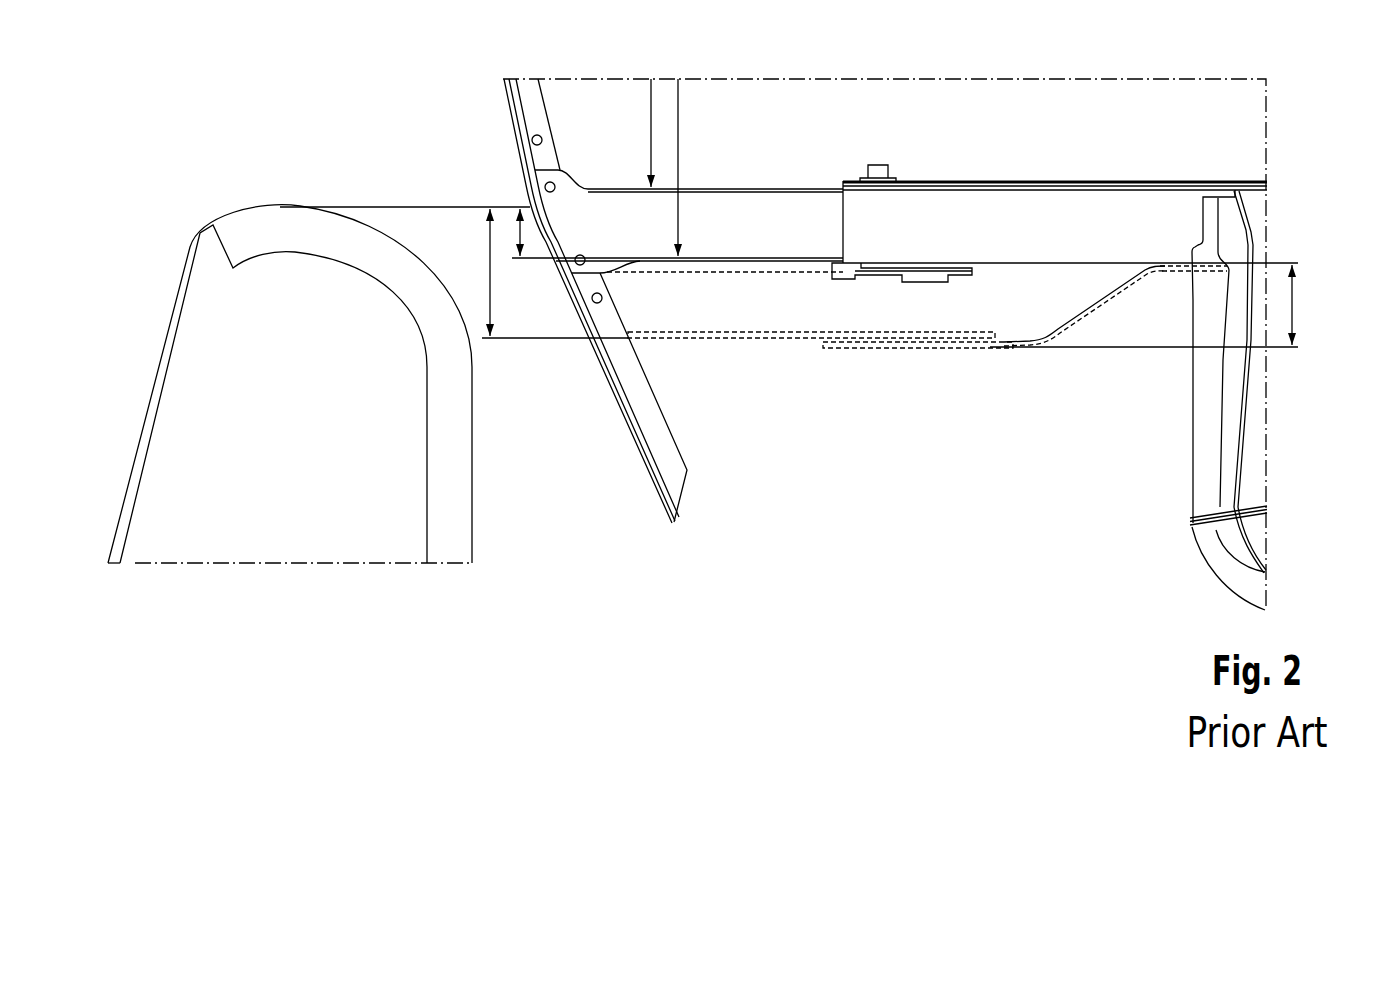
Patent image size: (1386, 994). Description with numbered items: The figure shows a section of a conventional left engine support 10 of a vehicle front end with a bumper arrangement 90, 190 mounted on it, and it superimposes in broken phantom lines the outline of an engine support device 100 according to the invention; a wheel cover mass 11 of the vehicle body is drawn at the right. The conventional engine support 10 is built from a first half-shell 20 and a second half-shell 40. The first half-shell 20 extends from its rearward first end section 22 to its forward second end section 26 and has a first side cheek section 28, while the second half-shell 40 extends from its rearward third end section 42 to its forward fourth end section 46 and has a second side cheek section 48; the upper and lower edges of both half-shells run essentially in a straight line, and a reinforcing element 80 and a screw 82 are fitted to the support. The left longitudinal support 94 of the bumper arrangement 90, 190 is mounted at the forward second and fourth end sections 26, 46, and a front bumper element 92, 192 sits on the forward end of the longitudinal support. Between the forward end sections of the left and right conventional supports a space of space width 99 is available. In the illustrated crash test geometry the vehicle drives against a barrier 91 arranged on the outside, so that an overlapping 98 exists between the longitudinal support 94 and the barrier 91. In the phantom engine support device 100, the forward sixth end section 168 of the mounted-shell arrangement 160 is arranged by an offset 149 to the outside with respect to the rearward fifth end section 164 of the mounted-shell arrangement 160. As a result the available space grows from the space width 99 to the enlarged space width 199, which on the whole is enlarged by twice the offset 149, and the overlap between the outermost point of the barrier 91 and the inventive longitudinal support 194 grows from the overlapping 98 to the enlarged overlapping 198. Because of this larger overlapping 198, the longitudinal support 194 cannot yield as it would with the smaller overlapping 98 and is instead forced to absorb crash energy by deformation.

The engine support 10 is at (1137, 165).
The wheel cover mass 11 is at (1258, 457).
The first half-shell 20 is at (1047, 268).
The first end section 22 is at (1183, 280).
The second end section 26 is at (880, 285).
The first side cheek section 28 is at (1011, 265).
The second half-shell 40 is at (1048, 175).
The third end section 42 is at (1246, 167).
The fourth end section 46 is at (919, 165).
The second side cheek section 48 is at (1000, 180).
The reinforcing element 80 is at (927, 283).
The screw 82 is at (879, 165).
The bumper arrangement 90 is at (508, 281).
The pillar 190 is at (475, 84).
The barrier 91 is at (171, 241).
The front bumper element 92 is at (533, 300).
The pillar flange 192 is at (505, 94).
The longitudinal support 94 is at (773, 197).
The overlapping 98 is at (520, 233).
The space width 99 is at (651, 121).
The engine support device 100 is at (1004, 354).
The offset 149 is at (1296, 305).
The mounted-shell arrangement 160 is at (1098, 314).
The fifth end section 164 is at (1171, 285).
The sixth end section 168 is at (842, 352).
The longitudinal support 194 is at (742, 319).
The overlapping 198 is at (487, 242).
The space width 199 is at (678, 122).